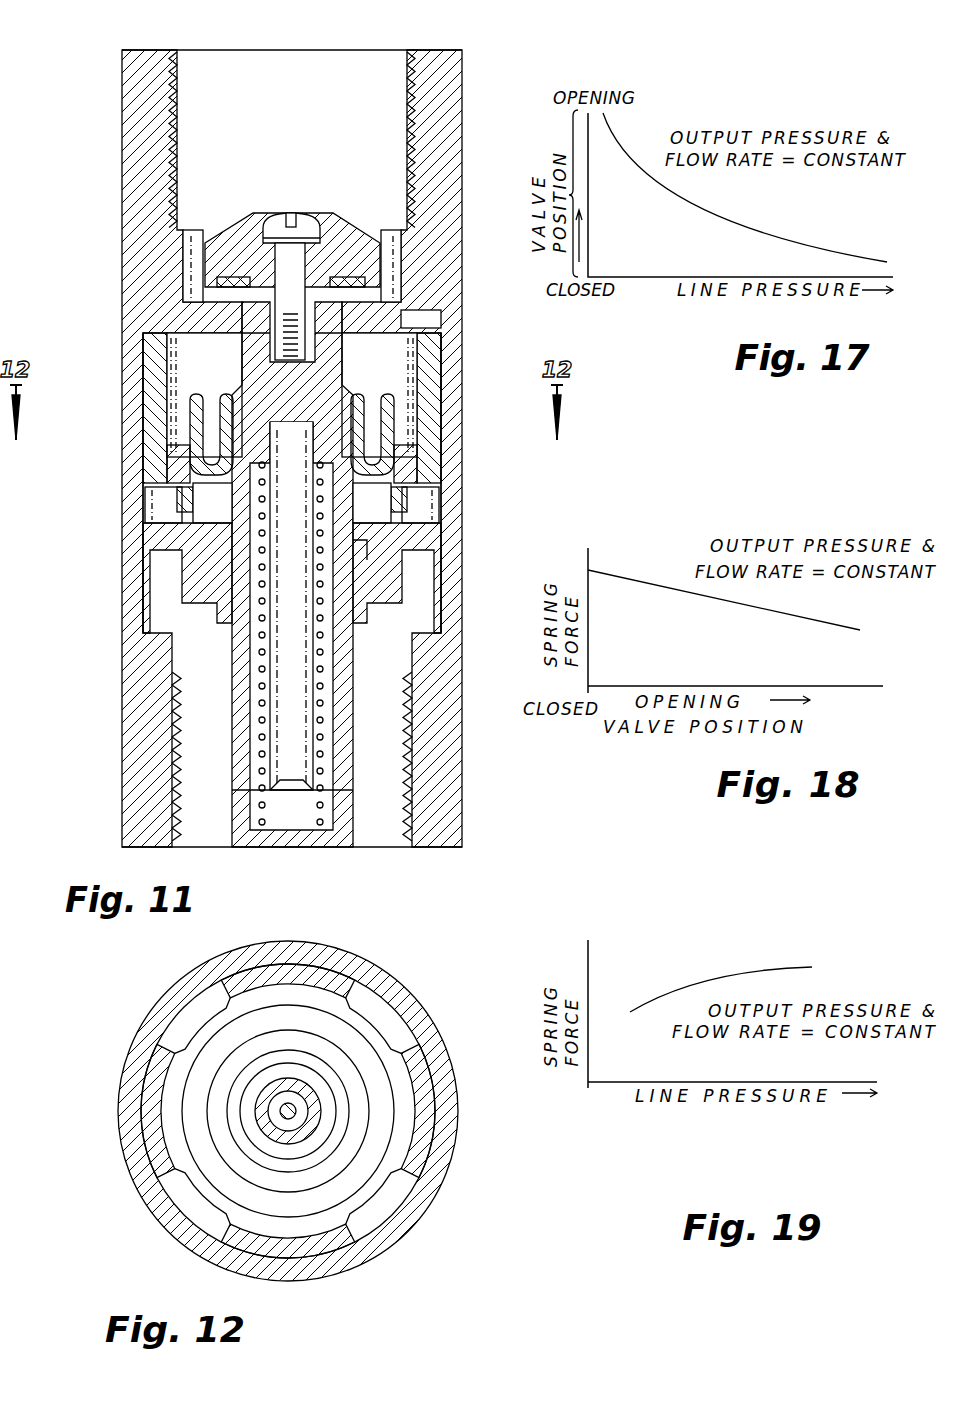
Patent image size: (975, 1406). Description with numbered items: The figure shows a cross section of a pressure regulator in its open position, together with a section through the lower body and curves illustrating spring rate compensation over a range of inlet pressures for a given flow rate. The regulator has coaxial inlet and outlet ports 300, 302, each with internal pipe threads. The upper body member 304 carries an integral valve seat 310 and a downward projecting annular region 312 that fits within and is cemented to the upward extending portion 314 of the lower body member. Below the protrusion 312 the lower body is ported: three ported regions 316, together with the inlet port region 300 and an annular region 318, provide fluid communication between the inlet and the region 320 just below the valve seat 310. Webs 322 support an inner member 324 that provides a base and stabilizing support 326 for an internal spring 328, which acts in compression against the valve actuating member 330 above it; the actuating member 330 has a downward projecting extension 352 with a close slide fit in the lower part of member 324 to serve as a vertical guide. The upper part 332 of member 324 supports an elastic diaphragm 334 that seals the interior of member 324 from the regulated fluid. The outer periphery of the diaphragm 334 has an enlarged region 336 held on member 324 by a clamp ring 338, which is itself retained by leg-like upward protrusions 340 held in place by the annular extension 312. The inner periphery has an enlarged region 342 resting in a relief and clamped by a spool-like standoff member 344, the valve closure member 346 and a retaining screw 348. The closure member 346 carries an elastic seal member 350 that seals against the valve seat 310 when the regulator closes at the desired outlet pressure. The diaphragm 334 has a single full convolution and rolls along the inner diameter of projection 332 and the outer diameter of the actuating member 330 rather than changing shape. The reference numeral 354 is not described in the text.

In FIG. 11, the inlet port 300 is at (185, 842).
In FIG. 11, the outlet port 302 is at (333, 58).
In FIG. 11, the upper body member 304 is at (457, 160).
In FIG. 11, the valve seat 310 is at (220, 300).
In FIG. 11, the downward projecting annular region 312 is at (150, 375).
In FIG. 12, the downward projecting annular region 312 is at (165, 1078).
In FIG. 11, the upward extending portion 314 is at (130, 352).
In FIG. 12, the upward extending portion 314 is at (150, 1013).
In FIG. 11, the ported regions 316 is at (420, 560).
In FIG. 12, the ported regions 316 is at (330, 992).
In FIG. 11, the annular region 318 is at (418, 438).
In FIG. 11, the region below the valve seat 320 is at (445, 335).
In FIG. 12, the webs 322 is at (400, 1003).
In FIG. 11, the inner member 324 is at (228, 840).
In FIG. 11, the stabilizing support 326 is at (300, 800).
In FIG. 11, the internal spring 328 is at (262, 720).
In FIG. 11, the valve actuating member 330 is at (190, 437).
In FIG. 12, the valve actuating member 330 is at (292, 1137).
In FIG. 11, the upper part of inner member 332 is at (193, 413).
In FIG. 11, the elastic diaphragm 334 is at (199, 390).
In FIG. 12, the elastic diaphragm 334 is at (232, 1038).
In FIG. 11, the enlarged region of outer periphery 336 is at (160, 492).
In FIG. 11, the clamp ring 338 is at (400, 475).
In FIG. 12, the clamp ring 338 is at (397, 1110).
In FIG. 11, the leg-like upward protrusions 340 is at (183, 455).
In FIG. 12, the leg-like upward protrusions 340 is at (228, 1112).
In FIG. 11, the enlarged region of inner periphery 342 is at (297, 397).
In FIG. 11, the spool-like standoff member 344 is at (260, 352).
In FIG. 12, the spool-like standoff member 344 is at (240, 1115).
In FIG. 11, the valve closure member 346 is at (230, 238).
In FIG. 11, the retaining screw 348 is at (280, 218).
In FIG. 12, the retaining screw 348 is at (292, 1114).
In FIG. 11, the elastic seal member 350 is at (345, 272).
In FIG. 11, the downward projecting extension 352 is at (250, 675).
In FIG. 11, the shoulder 354 is at (347, 580).